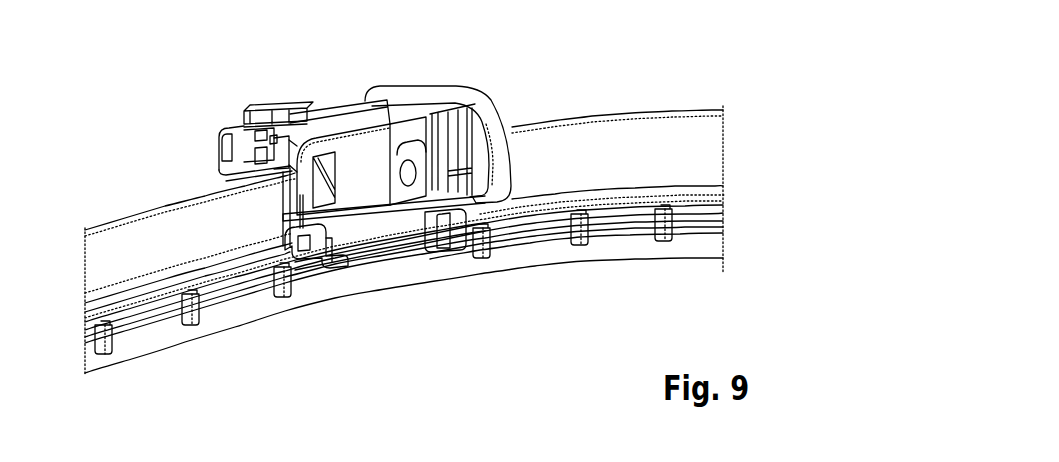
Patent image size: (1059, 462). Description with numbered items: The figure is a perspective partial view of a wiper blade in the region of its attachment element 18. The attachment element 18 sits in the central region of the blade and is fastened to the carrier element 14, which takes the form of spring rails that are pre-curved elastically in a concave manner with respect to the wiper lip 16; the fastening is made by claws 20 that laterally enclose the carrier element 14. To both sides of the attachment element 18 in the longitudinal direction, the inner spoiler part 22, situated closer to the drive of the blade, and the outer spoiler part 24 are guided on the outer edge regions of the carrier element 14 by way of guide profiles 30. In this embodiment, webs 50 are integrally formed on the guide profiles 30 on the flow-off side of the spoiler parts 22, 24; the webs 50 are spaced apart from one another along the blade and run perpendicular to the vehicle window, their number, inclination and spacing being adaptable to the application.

The carrier element 14 is at (403, 242).
The wiper lip 16 is at (242, 309).
The attachment element 18 is at (314, 87).
The claws 20 is at (343, 262).
The inner spoiler part 22 is at (178, 205).
The outer spoiler part 24 is at (633, 125).
The guide profiles 30 is at (140, 317).
The webs 50 is at (110, 353).